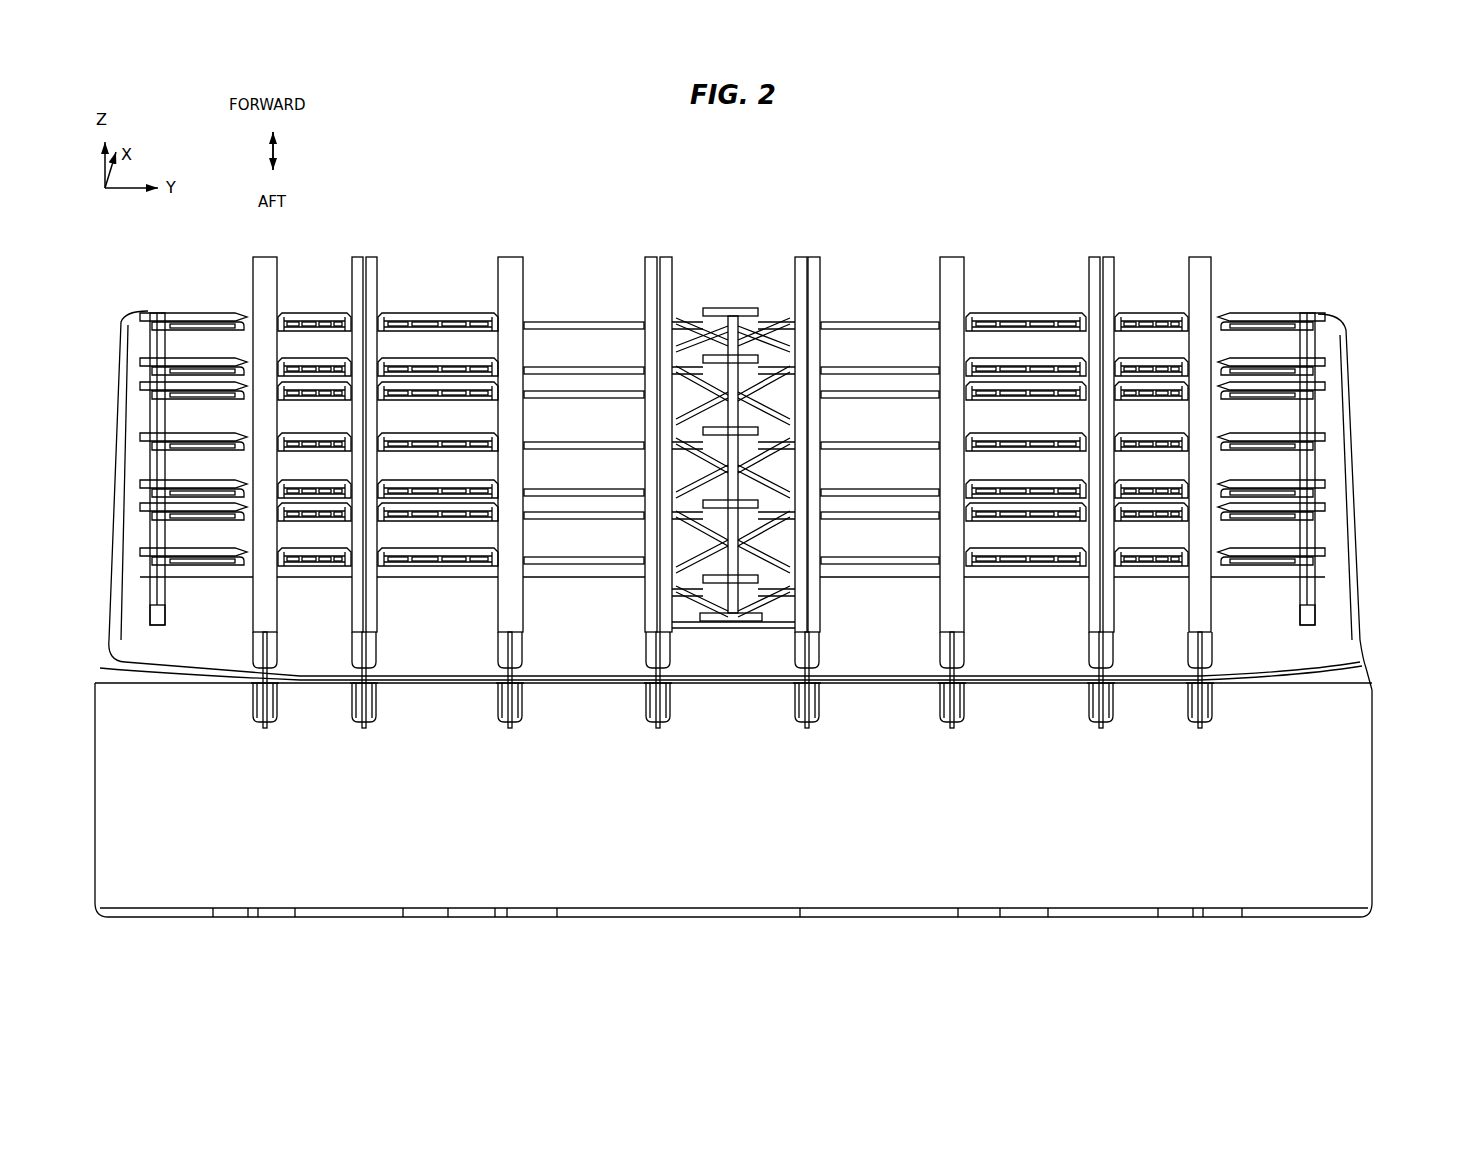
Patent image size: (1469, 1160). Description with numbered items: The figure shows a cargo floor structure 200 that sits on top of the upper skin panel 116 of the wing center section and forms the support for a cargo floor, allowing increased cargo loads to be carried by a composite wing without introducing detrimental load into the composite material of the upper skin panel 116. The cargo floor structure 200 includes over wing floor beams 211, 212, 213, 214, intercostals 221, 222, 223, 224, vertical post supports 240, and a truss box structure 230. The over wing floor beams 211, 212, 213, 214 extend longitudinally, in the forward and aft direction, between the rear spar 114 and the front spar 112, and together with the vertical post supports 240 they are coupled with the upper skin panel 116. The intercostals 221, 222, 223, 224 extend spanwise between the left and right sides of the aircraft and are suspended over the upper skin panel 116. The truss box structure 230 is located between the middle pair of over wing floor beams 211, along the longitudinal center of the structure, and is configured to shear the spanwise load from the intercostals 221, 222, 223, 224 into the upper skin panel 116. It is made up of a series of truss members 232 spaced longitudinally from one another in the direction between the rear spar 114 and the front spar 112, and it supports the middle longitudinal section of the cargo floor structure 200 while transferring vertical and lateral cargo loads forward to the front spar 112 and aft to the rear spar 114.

The cargo floor structure 200 is at (492, 146).
The front spar 112 is at (1357, 357).
The rear spar 114 is at (1080, 882).
The upper skin panel 116 is at (1357, 566).
The over wing floor beam 211 is at (656, 252).
The over wing floor beam 212 is at (510, 252).
The over wing floor beam 213 is at (362, 252).
The over wing floor beam 214 is at (262, 252).
The intercostal 221 is at (592, 610).
The intercostal 222 is at (437, 569).
The intercostal 223 is at (320, 585).
The intercostal 224 is at (206, 569).
The truss box structure 230 is at (720, 501).
The truss members 232 is at (748, 352).
The vertical post supports 240 is at (148, 592).